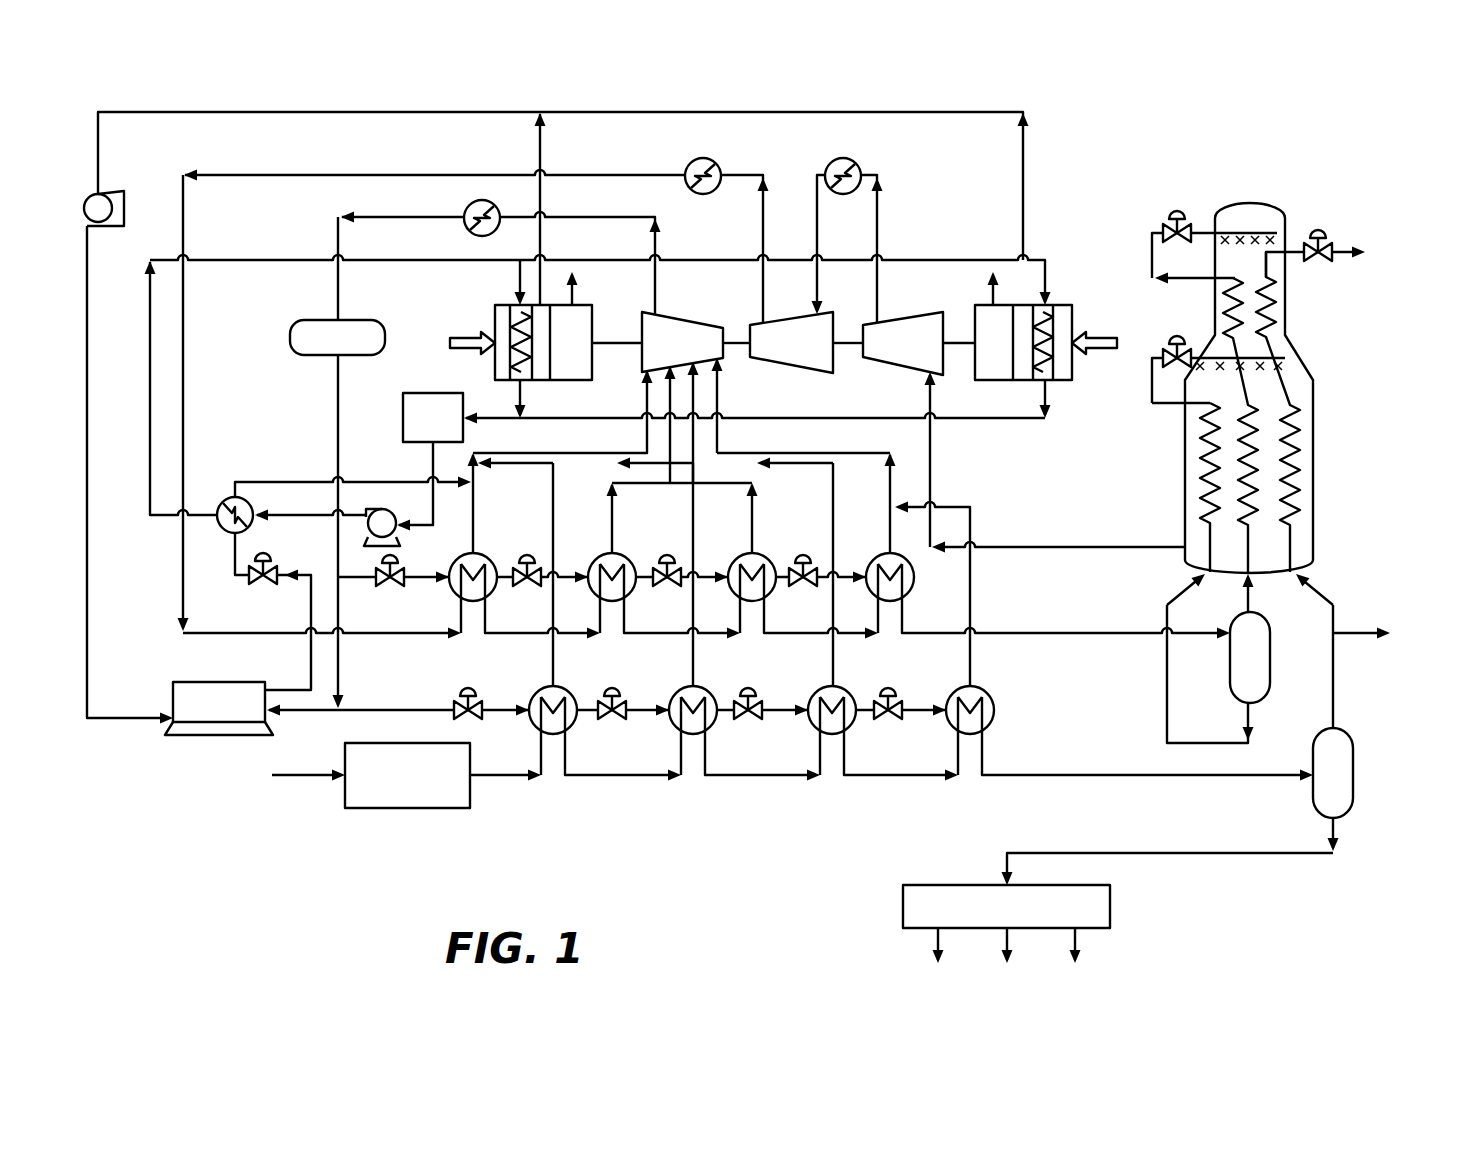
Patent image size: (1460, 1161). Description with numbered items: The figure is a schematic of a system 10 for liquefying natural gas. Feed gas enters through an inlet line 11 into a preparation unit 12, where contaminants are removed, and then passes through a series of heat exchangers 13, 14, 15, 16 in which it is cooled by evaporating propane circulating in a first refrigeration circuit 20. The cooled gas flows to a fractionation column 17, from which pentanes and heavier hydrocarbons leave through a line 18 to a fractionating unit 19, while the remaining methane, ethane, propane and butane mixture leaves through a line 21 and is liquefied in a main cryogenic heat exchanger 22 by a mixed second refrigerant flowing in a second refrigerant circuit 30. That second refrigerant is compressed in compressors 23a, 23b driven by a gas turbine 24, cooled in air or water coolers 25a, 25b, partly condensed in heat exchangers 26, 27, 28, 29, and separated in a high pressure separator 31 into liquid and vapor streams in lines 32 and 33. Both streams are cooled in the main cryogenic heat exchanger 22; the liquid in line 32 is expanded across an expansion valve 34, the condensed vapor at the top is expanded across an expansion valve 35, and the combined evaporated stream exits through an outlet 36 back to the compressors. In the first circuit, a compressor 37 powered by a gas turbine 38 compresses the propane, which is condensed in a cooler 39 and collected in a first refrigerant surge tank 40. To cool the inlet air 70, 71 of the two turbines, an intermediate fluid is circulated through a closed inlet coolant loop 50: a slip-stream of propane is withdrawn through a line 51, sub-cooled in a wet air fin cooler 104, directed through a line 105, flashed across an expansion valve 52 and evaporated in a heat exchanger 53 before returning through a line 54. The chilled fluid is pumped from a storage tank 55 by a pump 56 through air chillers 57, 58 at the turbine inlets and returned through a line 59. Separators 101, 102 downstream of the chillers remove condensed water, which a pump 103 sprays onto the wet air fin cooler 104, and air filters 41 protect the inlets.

The system 10 is at (336, 88).
The inlet line 11 is at (308, 786).
The preparation unit 12 is at (445, 812).
The heat exchanger 13 is at (532, 692).
The heat exchanger 14 is at (671, 692).
The heat exchanger 15 is at (811, 692).
The heat exchanger 16 is at (951, 692).
The fractionation column 17 is at (1352, 758).
The line 18 is at (1153, 852).
The fractionating unit 19 is at (948, 884).
The first refrigeration circuit 20 is at (334, 428).
The line 21 is at (1322, 600).
The main cryogenic heat exchanger 22 is at (1312, 370).
The compressor 23a is at (922, 374).
The compressor 23b is at (814, 375).
The gas turbine 24 is at (983, 318).
The cooler 25a is at (692, 168).
The cooler 25b is at (832, 168).
The heat exchanger 26 is at (452, 560).
The heat exchanger 27 is at (592, 556).
The heat exchanger 28 is at (732, 556).
The heat exchanger 29 is at (880, 554).
The second refrigerant circuit 30 is at (180, 583).
The high pressure separator 31 is at (1270, 663).
The line 32 is at (1165, 712).
The line 33 is at (1255, 598).
The expansion valve 34 is at (1170, 345).
The expansion valve 35 is at (1168, 220).
The outlet 36 is at (1062, 556).
The compressor 37 is at (683, 326).
The gas turbine 38 is at (578, 315).
The condenser or cooler 39 is at (467, 210).
The first refrigerant surge tank 40 is at (290, 332).
The air filter 41 is at (499, 318).
The inlet coolant loop 50 is at (270, 256).
The line 51 is at (305, 712).
The expansion valve 52 is at (268, 573).
The heat exchanger 53 is at (220, 500).
The line 54 is at (291, 480).
The storage tank 55 is at (401, 412).
The pump 56 is at (375, 508).
The air chiller 57 is at (1046, 338).
The air chiller 58 is at (512, 366).
The line 59 is at (545, 422).
The inlet air 70 is at (1105, 350).
The inlet air 71 is at (470, 337).
The separator 101 is at (540, 384).
The separator 102 is at (1030, 384).
The pump 103 is at (122, 203).
The wet air fin cooler 104 is at (172, 697).
The line 105 is at (309, 668).